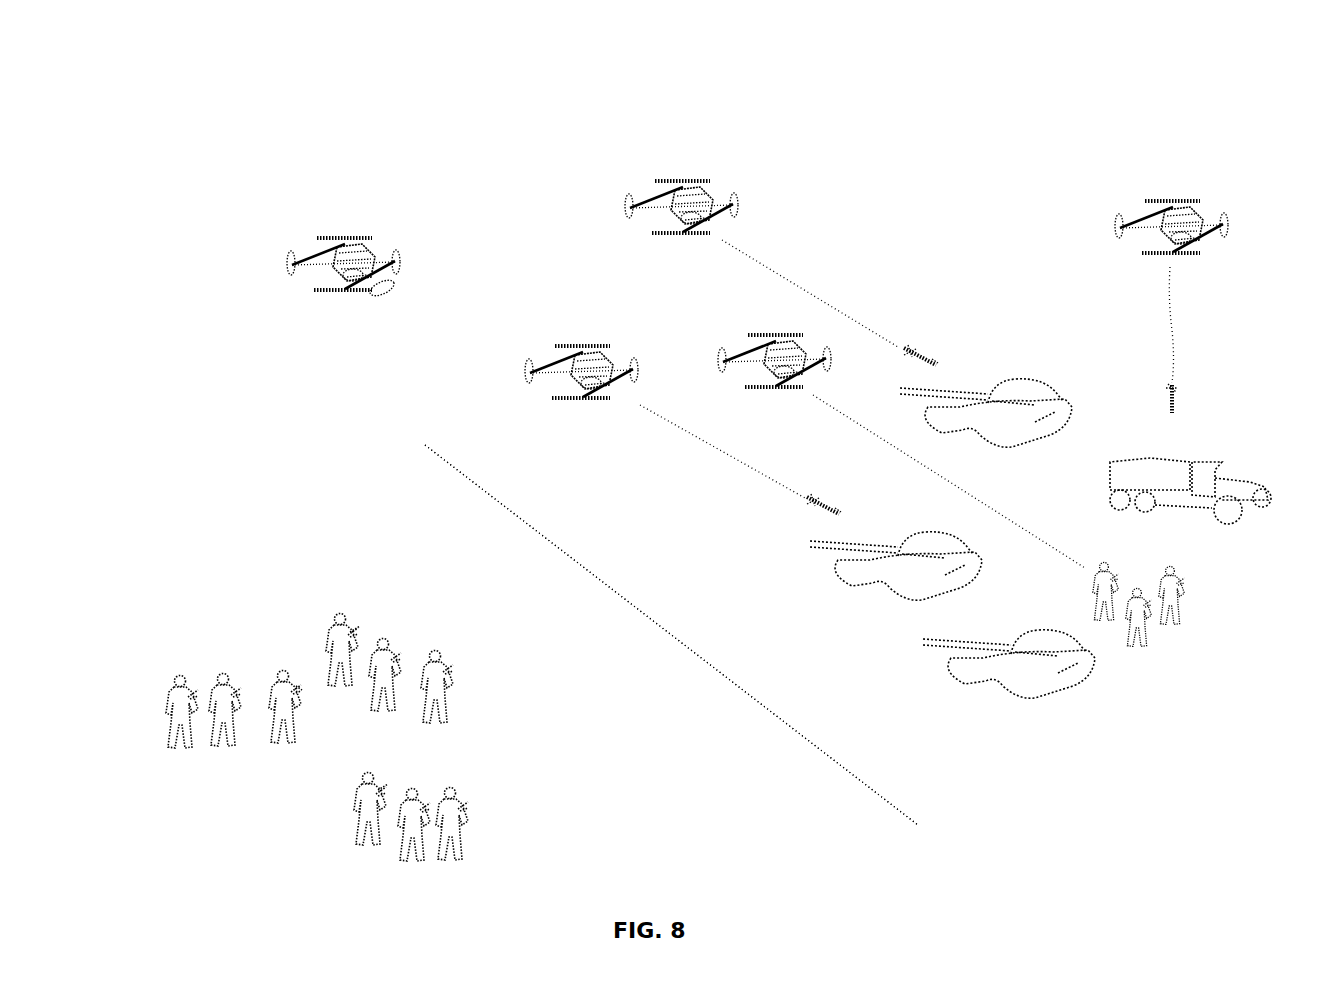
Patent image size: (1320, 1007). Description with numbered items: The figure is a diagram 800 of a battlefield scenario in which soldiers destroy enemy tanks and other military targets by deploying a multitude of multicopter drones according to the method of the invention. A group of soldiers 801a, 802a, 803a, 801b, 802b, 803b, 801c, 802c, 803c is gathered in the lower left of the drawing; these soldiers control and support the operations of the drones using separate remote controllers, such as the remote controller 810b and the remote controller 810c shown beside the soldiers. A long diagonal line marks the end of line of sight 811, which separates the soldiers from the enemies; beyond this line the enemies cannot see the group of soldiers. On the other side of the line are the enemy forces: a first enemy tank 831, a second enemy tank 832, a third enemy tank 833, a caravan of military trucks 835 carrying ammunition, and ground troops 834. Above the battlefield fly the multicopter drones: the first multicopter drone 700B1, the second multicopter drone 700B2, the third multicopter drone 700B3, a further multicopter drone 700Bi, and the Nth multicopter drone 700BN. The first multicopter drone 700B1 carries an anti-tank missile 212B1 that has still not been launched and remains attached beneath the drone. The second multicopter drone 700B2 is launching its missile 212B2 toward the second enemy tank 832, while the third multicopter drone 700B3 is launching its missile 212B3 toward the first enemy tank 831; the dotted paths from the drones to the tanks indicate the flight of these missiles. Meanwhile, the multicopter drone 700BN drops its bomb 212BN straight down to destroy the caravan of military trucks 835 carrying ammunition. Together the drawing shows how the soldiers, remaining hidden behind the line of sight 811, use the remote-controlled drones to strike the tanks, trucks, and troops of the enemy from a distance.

The diagram 800 is at (1082, 96).
The first multicopter drone 700B1 is at (315, 257).
The second multicopter drone 700B2 is at (548, 368).
The third multicopter drone 700B3 is at (652, 202).
The multicopter drone 700Bi is at (740, 357).
The Nth multicopter drone 700BN is at (1163, 215).
The anti-tank missile 212B1 is at (374, 292).
The missile 212B2 is at (808, 503).
The missile 212B3 is at (980, 338).
The bomb 212BN is at (1175, 400).
The first enemy tank 831 is at (1033, 390).
The second enemy tank 832 is at (917, 548).
The third enemy tank 833 is at (1033, 637).
The ground troops 834 is at (1196, 604).
The caravan of military trucks 835 is at (1145, 465).
The end of line of sight 811 is at (813, 747).
The soldier 801a is at (328, 637).
The soldier 801b is at (283, 677).
The soldier 801c is at (357, 797).
The soldier 802a is at (390, 663).
The soldier 802b is at (225, 677).
The soldier 802c is at (412, 802).
The soldier 803a is at (438, 675).
The soldier 803b is at (167, 703).
The soldier 803c is at (458, 808).
The remote controller 810b is at (357, 627).
The remote controller 810c is at (382, 787).